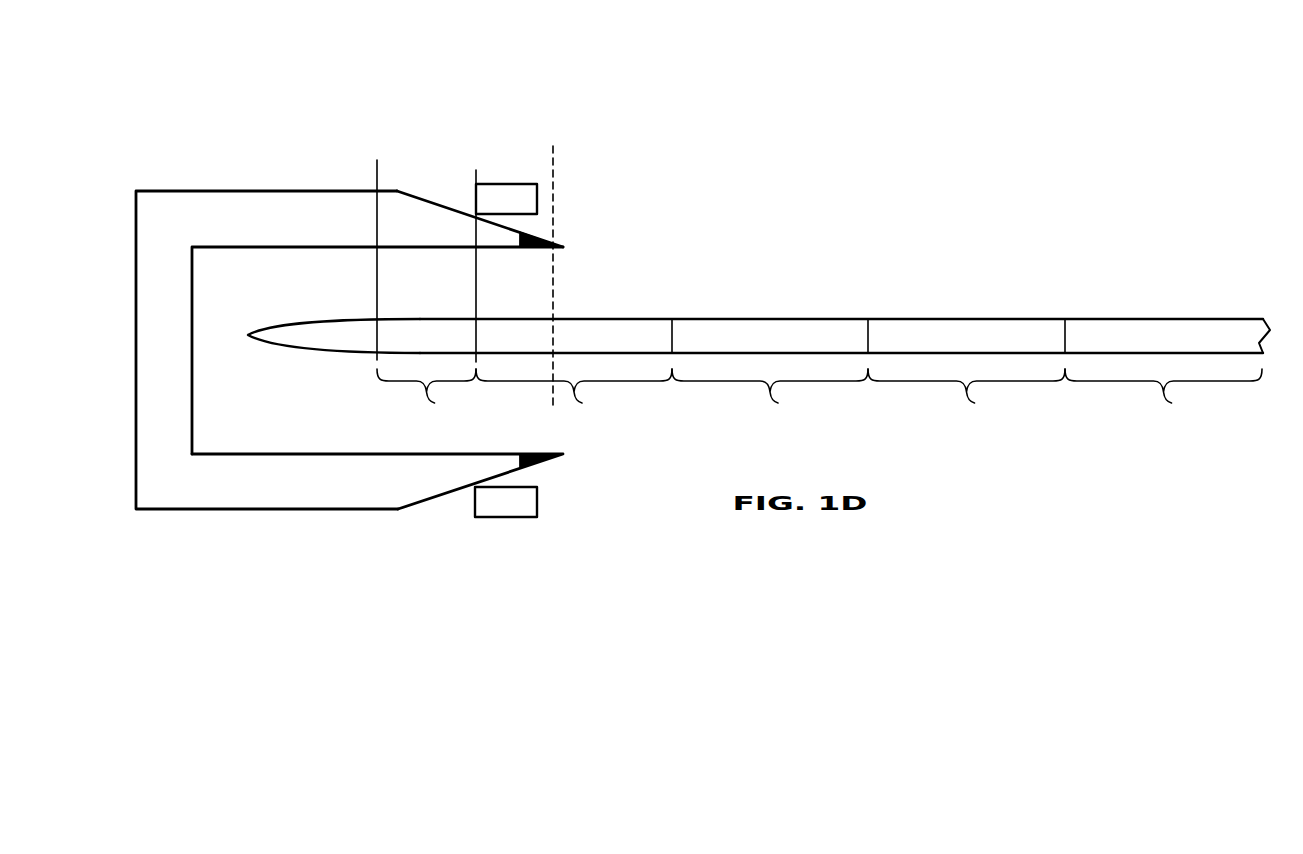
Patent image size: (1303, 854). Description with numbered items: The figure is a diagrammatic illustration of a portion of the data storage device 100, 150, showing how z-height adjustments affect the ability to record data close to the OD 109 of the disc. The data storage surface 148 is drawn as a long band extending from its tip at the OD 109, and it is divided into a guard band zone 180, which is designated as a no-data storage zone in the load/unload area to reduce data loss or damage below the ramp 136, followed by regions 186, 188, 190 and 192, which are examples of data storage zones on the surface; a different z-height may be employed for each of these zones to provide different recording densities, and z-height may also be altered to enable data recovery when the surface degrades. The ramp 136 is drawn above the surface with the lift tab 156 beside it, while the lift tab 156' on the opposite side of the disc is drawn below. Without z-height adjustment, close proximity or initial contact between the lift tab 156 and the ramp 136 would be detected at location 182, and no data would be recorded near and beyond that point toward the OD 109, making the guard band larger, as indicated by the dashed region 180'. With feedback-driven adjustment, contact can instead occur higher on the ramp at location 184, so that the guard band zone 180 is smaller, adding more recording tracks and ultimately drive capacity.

The data storage device 100 is at (703, 280).
The data storage device 150 is at (1063, 99).
The ramp 136 is at (343, 169).
The location 184 is at (472, 217).
The guard band 180' is at (466, 244).
The lift tab 156 is at (554, 179).
The lift tab 156' is at (554, 486).
The location 182 is at (548, 239).
The data storage surface 148 is at (938, 287).
The OD 109 is at (248, 335).
The guard band zone 180 is at (426, 399).
The data storage zone 186 is at (574, 374).
The data storage zone 188 is at (770, 374).
The data storage zone 190 is at (966, 374).
The data storage zone 192 is at (1163, 399).